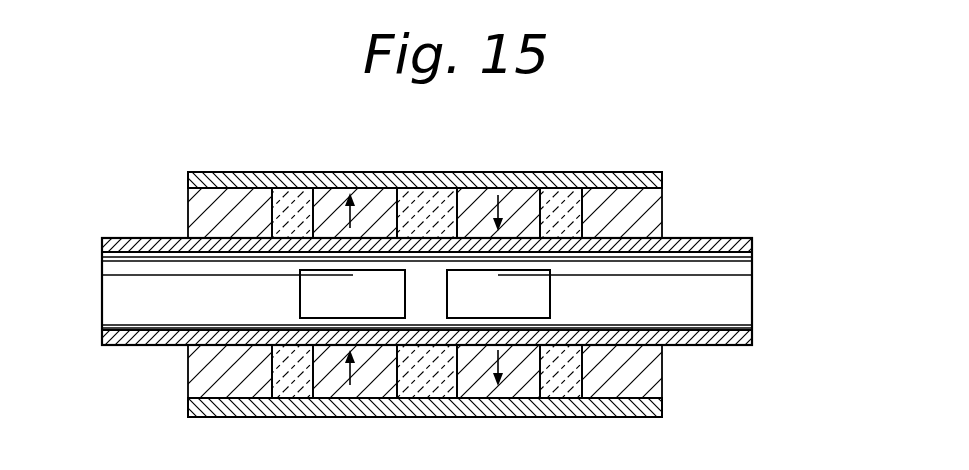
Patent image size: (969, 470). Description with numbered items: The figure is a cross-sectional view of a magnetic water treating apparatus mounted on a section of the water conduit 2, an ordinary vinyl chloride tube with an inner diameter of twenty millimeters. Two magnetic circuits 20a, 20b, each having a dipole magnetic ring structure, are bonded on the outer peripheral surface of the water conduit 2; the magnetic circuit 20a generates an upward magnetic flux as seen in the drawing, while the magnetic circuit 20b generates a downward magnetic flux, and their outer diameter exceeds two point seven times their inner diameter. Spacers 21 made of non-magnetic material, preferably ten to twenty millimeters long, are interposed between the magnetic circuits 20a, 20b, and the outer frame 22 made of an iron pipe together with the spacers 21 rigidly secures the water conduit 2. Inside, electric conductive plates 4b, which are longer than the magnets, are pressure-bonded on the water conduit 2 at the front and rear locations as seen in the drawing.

The water conduit 2 is at (708, 238).
The electric conductive plate 4b is at (310, 288).
The magnetic circuit 20a is at (373, 196).
The magnetic circuit 20b is at (518, 197).
The spacer 21 is at (298, 392).
The outer frame 22 is at (630, 173).